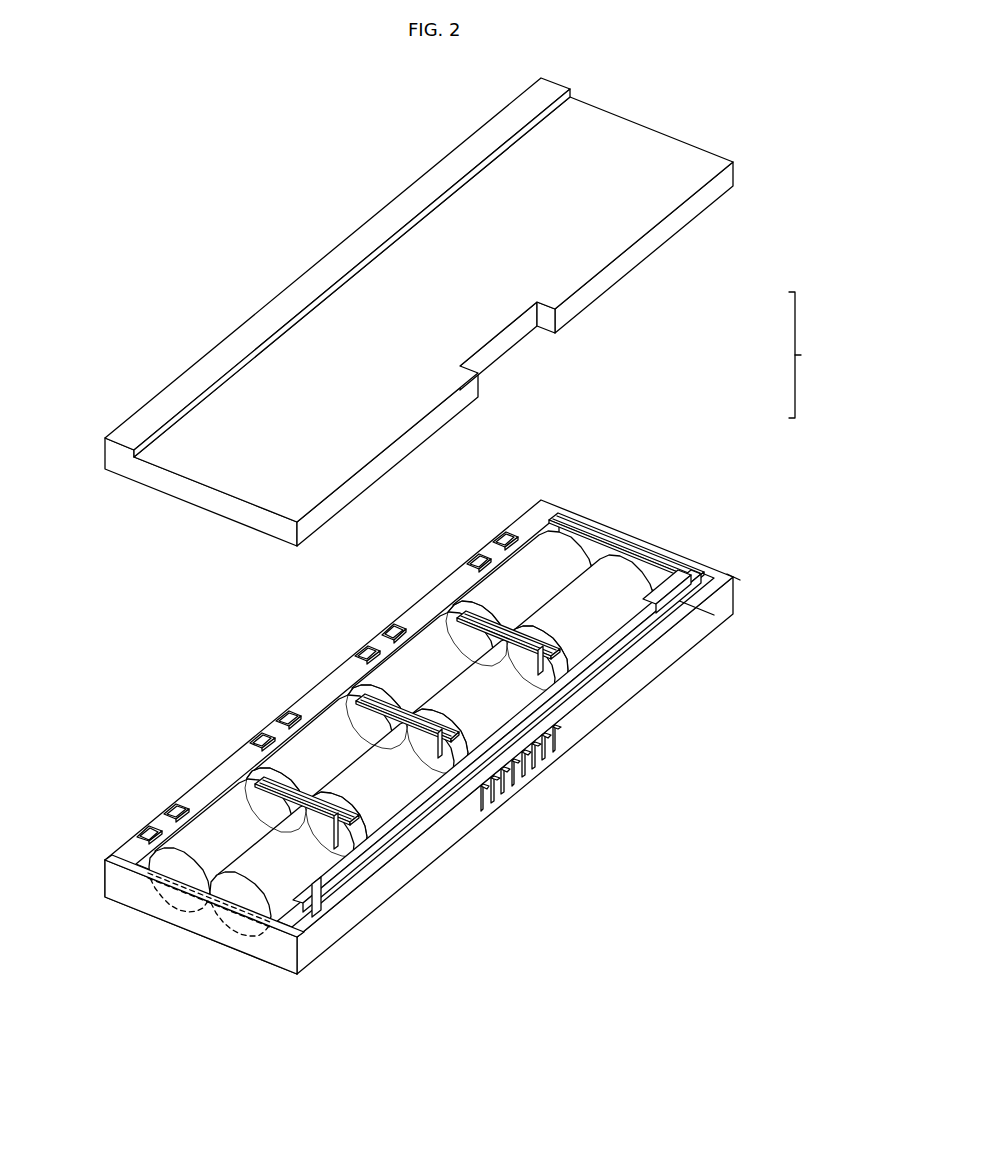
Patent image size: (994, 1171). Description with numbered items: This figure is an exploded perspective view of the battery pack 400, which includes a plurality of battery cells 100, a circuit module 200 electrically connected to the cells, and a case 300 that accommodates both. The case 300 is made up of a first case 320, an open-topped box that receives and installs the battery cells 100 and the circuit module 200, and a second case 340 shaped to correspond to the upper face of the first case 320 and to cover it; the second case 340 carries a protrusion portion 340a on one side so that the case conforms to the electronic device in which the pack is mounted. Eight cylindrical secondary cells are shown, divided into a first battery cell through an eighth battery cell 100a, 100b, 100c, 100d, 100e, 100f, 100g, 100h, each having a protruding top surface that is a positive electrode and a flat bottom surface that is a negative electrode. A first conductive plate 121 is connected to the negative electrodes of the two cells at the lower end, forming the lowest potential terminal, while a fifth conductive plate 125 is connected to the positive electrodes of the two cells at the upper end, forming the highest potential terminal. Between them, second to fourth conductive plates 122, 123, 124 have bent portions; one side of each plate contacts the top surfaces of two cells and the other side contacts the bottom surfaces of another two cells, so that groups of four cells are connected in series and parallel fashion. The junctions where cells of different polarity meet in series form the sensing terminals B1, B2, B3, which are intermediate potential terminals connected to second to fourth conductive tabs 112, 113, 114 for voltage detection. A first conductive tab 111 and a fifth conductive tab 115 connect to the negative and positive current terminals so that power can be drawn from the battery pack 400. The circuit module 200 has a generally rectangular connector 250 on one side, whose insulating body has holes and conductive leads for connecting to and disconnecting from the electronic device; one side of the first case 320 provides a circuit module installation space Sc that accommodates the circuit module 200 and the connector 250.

The battery pack 400 is at (444, 312).
The second case 340 is at (444, 312).
The protrusion portion 340a is at (405, 206).
The case 300 is at (813, 355).
The first case 320 is at (645, 540).
The circuit module 200 is at (703, 593).
The battery cells 100 is at (345, 715).
The first battery cell 100a is at (221, 845).
The second battery cell 100b is at (282, 869).
The third battery cell 100c is at (319, 763).
The fourth battery cell 100d is at (380, 788).
The fifth battery cell 100e is at (420, 680).
The sixth battery cell 100f is at (481, 705).
The seventh battery cell 100g is at (519, 598).
The eighth battery cell 100h is at (580, 622).
The first conductive plate 121 is at (168, 878).
The second conductive plate 122 is at (258, 786).
The third conductive plate 123 is at (358, 702).
The fourth conductive plate 124 is at (458, 618).
The fifth conductive plate 125 is at (545, 505).
The first conductive tab 111 is at (305, 928).
The second conductive tab 112 is at (330, 838).
The third conductive tab 113 is at (440, 735).
The fourth conductive tab 114 is at (600, 650).
The fifth conductive tab 115 is at (677, 607).
The connector 250 is at (513, 778).
The sensing terminal B1 is at (243, 740).
The sensing terminal B2 is at (365, 644).
The sensing terminal B3 is at (461, 561).
The circuit module installation space Sc is at (740, 580).